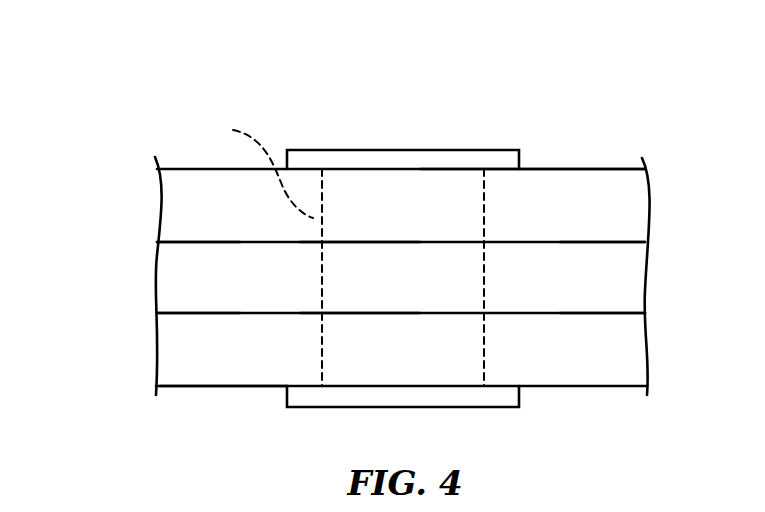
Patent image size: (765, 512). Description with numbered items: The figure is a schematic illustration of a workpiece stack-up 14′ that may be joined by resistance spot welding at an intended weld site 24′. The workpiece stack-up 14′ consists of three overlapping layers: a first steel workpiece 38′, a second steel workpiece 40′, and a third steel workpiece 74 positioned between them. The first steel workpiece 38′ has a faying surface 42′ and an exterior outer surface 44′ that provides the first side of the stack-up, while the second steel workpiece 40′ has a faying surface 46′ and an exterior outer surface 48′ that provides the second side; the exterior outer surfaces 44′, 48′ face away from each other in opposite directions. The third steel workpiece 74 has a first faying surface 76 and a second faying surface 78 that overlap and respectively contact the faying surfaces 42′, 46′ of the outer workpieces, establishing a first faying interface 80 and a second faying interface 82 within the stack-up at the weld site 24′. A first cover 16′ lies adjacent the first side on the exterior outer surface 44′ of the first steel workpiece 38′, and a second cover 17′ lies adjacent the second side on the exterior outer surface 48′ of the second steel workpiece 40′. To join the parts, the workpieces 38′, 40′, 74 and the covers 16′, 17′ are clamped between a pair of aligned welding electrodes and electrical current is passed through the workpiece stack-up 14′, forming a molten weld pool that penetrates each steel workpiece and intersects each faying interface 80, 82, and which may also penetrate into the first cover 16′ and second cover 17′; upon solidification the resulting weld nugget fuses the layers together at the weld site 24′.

The workpiece stack-up 14′ is at (134, 98).
The first cover 16′ is at (420, 150).
The second cover 17′ is at (522, 397).
The weld site 24′ is at (246, 165).
The first steel workpiece 38′ is at (580, 222).
The second steel workpiece 40′ is at (580, 366).
The third steel workpiece 74 is at (543, 294).
The faying surface 42′ is at (187, 242).
The exterior outer surface 44′ is at (575, 169).
The faying surface 46′ is at (187, 313).
The exterior outer surface 48′ is at (202, 386).
The first faying surface 76 is at (618, 242).
The second faying surface 78 is at (618, 313).
The first faying interface 80 is at (357, 243).
The second faying interface 82 is at (357, 313).